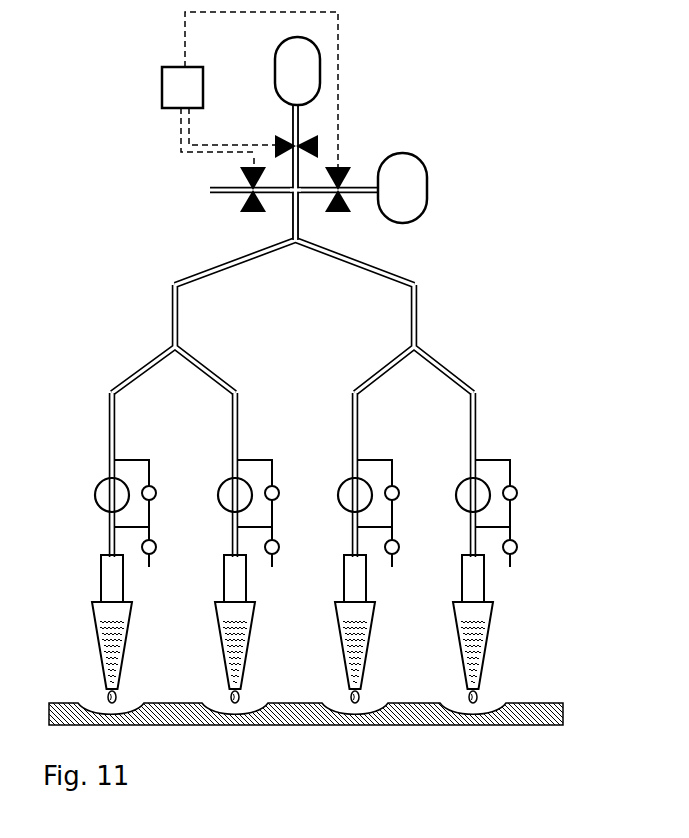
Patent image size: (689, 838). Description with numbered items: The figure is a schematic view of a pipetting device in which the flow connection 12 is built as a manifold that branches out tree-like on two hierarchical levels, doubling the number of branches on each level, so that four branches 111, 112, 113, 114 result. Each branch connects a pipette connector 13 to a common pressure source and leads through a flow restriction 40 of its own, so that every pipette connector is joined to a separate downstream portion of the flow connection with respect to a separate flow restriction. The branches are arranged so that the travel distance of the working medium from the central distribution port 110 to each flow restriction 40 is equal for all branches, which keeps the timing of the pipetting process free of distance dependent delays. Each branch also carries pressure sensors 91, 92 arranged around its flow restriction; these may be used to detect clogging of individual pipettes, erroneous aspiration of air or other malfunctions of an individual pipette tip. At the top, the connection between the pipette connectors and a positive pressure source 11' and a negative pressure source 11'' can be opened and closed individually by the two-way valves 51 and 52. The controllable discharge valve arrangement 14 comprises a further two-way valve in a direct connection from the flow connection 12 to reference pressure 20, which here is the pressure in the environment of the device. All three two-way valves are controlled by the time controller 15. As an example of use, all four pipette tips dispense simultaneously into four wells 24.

The negative pressure source 11'' is at (351, 71).
The positive pressure source 11' is at (442, 182).
The flow connection 12 is at (395, 273).
The pipette connector 13 is at (483, 590).
The controllable discharge valve arrangement 14 is at (224, 208).
The time controller 15 is at (194, 100).
The reference pressure 20 is at (199, 203).
The well 24 is at (495, 708).
The flow restriction 40 is at (486, 482).
The two-way valve 51 is at (370, 148).
The two-way valve 52 is at (328, 134).
The pressure sensor 91 is at (517, 492).
The pressure sensor 92 is at (517, 548).
The central distribution port 110 is at (283, 208).
The branch 111 is at (477, 418).
The branch 112 is at (348, 438).
The branch 113 is at (240, 403).
The branch 114 is at (107, 420).